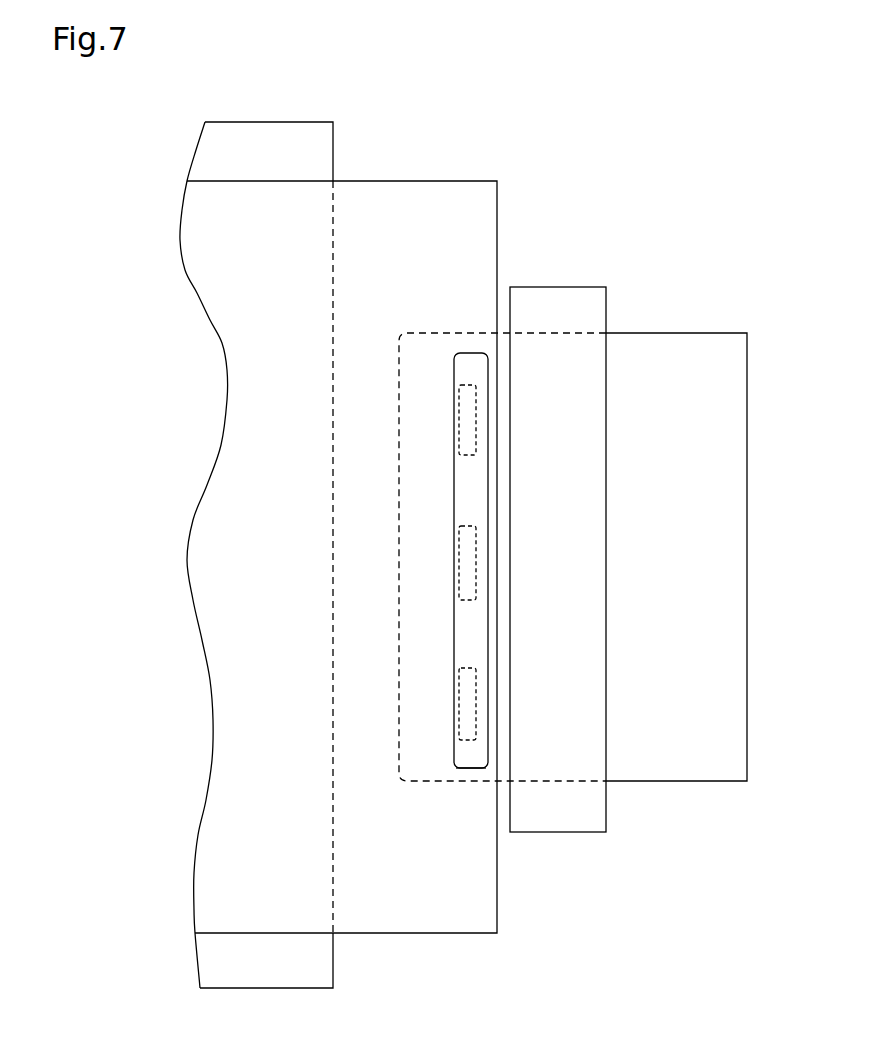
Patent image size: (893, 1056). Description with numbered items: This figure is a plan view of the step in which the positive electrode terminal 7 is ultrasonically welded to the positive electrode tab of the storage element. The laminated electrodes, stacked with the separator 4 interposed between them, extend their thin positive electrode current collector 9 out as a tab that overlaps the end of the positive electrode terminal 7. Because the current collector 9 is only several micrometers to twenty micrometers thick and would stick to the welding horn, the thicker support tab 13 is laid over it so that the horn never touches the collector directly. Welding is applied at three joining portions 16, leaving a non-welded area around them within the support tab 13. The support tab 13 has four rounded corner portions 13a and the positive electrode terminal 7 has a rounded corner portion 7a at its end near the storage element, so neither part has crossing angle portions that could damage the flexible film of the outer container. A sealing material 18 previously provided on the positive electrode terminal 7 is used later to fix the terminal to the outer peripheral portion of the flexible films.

The separator 4 is at (280, 155).
The positive electrode current collector 9 is at (433, 222).
The sealing material 18 is at (592, 315).
The positive electrode terminal 7 is at (707, 373).
The rounded corner portion 7a is at (399, 782).
The support tab 13 is at (472, 758).
The corner portion 13a is at (462, 768).
The joining portion 16 is at (459, 420).